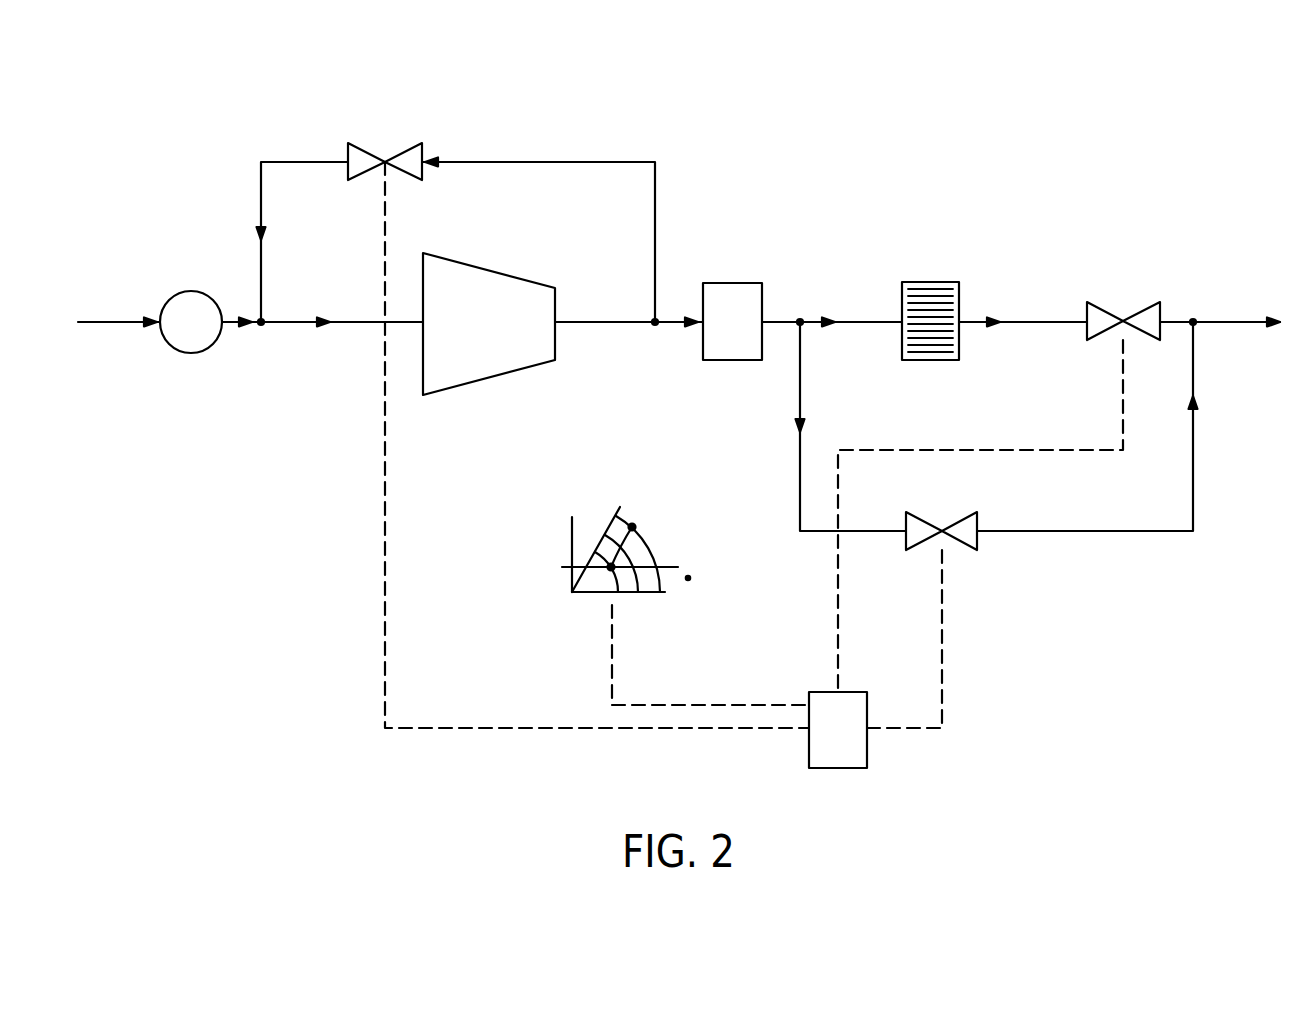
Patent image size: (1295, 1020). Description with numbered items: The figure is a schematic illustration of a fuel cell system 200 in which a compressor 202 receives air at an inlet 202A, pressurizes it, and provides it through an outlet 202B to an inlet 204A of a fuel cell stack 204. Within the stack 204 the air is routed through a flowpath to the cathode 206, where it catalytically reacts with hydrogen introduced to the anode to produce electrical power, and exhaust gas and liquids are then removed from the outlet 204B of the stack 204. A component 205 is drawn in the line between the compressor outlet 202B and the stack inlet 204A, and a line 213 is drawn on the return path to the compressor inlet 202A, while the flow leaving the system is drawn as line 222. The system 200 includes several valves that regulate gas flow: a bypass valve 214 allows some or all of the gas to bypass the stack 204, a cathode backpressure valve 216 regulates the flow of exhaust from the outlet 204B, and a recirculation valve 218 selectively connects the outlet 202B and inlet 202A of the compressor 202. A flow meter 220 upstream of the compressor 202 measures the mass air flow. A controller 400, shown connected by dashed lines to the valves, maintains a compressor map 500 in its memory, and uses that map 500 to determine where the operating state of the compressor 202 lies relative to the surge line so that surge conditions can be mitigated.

The fuel cell system 200 is at (192, 150).
The compressor 202 is at (498, 273).
The inlet 202A is at (324, 318).
The outlet 202B is at (588, 318).
The stack 204 is at (930, 282).
The inlet 204A is at (826, 318).
The outlet 204B is at (991, 318).
The component box 205 is at (727, 283).
The cathode 206 is at (928, 346).
The recirculation line 213 is at (264, 235).
The bypass valve 214 is at (978, 542).
The cathode backpressure valve 216 is at (1143, 310).
The recirculation valve 218 is at (376, 152).
The flow meter 220 is at (187, 290).
The outlet line 222 is at (1228, 318).
The controller 400 is at (867, 753).
The compressor map 500 is at (546, 574).